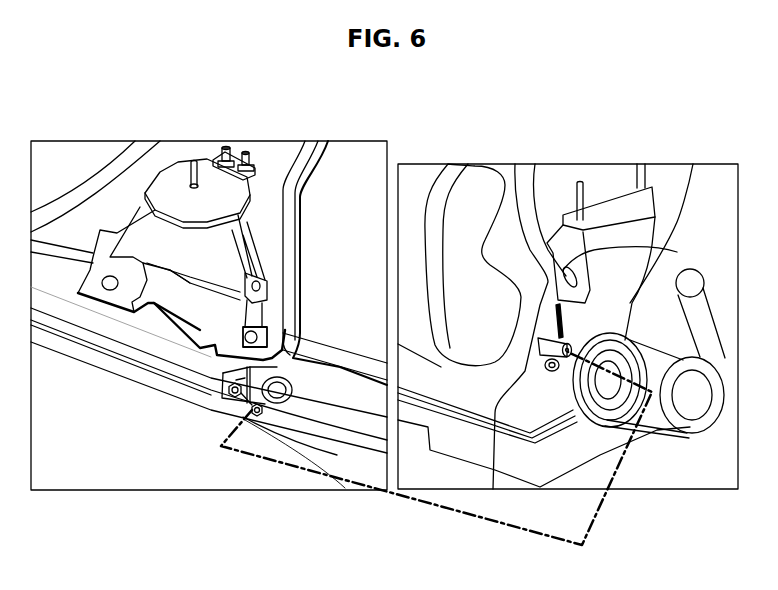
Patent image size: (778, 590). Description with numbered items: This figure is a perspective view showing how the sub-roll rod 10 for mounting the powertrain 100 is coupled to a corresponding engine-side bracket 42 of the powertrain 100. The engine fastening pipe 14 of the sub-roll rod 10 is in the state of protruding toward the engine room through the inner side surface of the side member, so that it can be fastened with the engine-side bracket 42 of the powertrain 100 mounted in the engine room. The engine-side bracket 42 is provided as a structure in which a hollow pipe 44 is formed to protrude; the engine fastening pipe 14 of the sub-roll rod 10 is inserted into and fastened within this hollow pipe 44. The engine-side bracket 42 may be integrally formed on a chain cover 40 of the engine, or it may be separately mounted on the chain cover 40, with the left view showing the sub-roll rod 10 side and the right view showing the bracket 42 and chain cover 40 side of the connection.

The sub-roll rod 10 is at (238, 405).
The engine fastening pipe 14 is at (263, 414).
The chain cover 40 is at (677, 252).
The engine-side bracket 42 is at (493, 489).
The hollow pipe 44 is at (545, 337).
The powertrain 100 is at (453, 450).